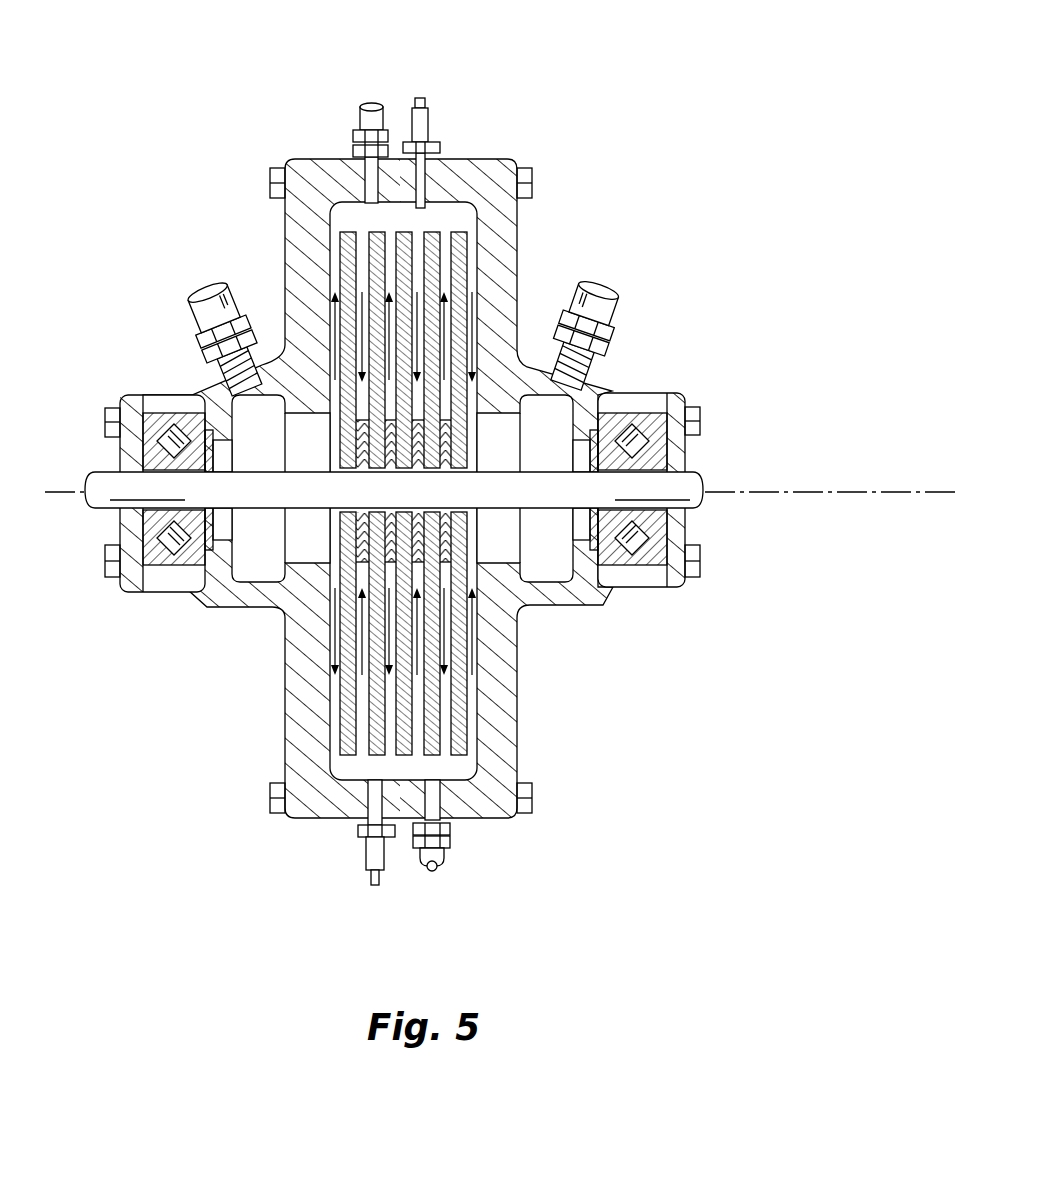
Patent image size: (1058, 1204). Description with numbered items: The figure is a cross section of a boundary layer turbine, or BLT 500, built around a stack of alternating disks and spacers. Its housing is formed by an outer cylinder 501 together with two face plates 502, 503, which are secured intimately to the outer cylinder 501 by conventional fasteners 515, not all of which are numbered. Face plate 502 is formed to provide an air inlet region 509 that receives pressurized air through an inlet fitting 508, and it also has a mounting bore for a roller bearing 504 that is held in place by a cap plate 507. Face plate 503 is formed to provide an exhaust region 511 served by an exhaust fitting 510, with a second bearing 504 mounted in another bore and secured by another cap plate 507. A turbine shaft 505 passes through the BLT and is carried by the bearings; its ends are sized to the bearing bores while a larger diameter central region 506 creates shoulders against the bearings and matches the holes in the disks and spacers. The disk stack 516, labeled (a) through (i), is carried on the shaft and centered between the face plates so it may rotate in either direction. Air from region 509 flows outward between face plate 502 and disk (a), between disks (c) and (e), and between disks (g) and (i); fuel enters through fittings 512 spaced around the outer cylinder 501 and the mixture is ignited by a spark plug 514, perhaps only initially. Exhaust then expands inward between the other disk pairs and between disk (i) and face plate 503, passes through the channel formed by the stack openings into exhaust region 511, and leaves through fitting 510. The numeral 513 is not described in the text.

The BLT 500 is at (552, 98).
The outer cylinder 501 is at (443, 158).
The face plate 502 is at (288, 268).
The face plate 503 is at (520, 238).
The roller bearing 504 is at (655, 395).
The turbine shaft 505 is at (100, 468).
The central region 506 is at (262, 505).
The cap plate 507 is at (125, 395).
The inlet fitting 508 is at (195, 343).
The air inlet region 509 is at (281, 488).
The fitting 510 is at (618, 345).
The exhaust region 511 is at (525, 488).
The fittings 512 is at (358, 138).
The chamber 513 is at (336, 208).
The spark plug 514 is at (425, 98).
The fasteners 515 is at (532, 180).
The disk stack 516 is at (472, 270).